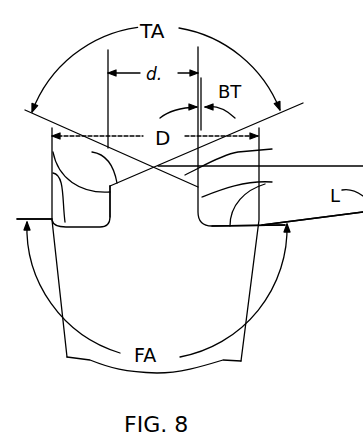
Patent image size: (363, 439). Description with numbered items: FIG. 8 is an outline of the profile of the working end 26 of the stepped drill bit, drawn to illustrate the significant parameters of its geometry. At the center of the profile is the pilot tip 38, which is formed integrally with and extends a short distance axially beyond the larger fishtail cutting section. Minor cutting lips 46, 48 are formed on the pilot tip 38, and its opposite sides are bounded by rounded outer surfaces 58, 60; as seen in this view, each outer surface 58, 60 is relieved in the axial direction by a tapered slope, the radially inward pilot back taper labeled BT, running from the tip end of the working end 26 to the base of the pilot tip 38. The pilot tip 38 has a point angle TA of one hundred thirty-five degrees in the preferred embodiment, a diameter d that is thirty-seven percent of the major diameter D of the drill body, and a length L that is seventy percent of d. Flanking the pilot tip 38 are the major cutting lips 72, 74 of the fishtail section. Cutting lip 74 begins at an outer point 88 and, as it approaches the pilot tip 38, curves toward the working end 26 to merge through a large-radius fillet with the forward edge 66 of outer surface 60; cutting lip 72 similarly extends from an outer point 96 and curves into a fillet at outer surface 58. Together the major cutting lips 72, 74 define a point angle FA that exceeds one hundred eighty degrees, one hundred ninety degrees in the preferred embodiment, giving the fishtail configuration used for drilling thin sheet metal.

The working end 26 is at (142, 156).
The pilot tip 38 is at (110, 212).
The minor cutting lip 46 is at (91, 164).
The minor cutting lip 48 is at (239, 156).
The rounded outer surface 58 is at (283, 165).
The rounded outer surface 60 is at (53, 152).
The forward edge 66 is at (362, 306).
The major cutting lip 72 is at (250, 200).
The major cutting lip 74 is at (53, 173).
The outer point 88 is at (52, 220).
The outer point 96 is at (258, 226).